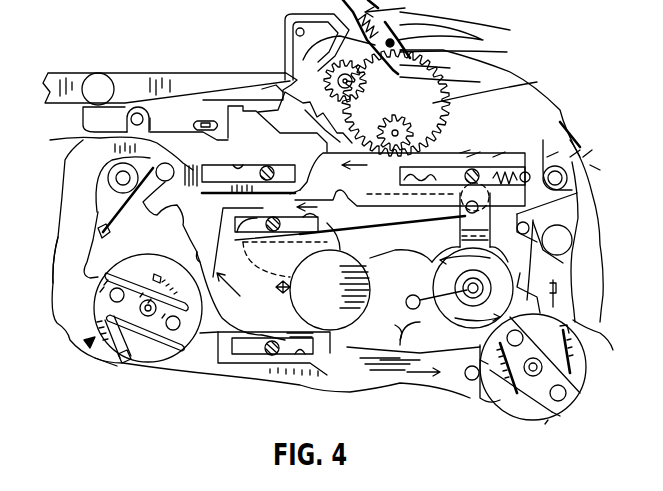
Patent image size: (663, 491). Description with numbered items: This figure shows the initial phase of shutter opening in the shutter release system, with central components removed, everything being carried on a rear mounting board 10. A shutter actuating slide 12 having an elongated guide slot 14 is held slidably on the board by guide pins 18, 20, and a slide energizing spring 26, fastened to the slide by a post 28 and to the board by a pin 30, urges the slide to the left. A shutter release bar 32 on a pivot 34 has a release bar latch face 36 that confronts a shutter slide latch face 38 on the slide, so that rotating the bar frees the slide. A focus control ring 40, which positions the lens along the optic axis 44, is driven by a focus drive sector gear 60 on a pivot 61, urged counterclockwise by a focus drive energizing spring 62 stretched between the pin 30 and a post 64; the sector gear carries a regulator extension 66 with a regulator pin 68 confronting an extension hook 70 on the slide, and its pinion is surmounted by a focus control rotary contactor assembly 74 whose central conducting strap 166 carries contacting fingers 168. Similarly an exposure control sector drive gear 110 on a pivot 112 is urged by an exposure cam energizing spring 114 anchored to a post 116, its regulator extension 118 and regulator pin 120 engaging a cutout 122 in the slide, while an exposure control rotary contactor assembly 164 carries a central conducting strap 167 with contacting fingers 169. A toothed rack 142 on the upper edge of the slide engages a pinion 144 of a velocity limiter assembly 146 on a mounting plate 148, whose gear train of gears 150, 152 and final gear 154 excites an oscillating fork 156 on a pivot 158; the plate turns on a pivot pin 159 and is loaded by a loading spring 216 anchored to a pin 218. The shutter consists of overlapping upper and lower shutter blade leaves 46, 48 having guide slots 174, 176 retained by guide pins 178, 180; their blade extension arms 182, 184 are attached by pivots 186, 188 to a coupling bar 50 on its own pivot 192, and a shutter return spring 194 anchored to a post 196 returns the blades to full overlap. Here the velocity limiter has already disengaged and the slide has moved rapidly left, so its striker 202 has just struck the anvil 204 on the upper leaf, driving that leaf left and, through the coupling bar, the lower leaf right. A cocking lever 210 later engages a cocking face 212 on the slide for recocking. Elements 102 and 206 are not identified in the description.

The rear mounting board 10 is at (510, 72).
The shutter actuating slide 12 is at (460, 153).
The elongated guide slot 14 is at (493, 157).
The guide pin 18 is at (467, 157).
The guide pin 20 is at (246, 163).
The slide energizing spring 26 is at (547, 157).
The post 28 is at (570, 157).
The pin 30 is at (70, 140).
The shutter release bar 32 is at (122, 73).
The pivot 34 is at (70, 73).
The release bar latch face 36 is at (228, 104).
The shutter slide latch face 38 is at (286, 96).
The focus control ring 40 is at (472, 176).
The optic axis 44 is at (292, 287).
The upper shutter blade leaf 46 is at (212, 318).
The lower shutter blade leaf 48 is at (380, 258).
The coupling bar 50 is at (447, 258).
The focus drive sector gear 60 is at (243, 291).
The pivot 61 is at (108, 170).
The focus drive energizing spring 62 is at (83, 205).
The post 64 is at (98, 230).
The regulator extension 66 is at (152, 116).
The regulator pin 68 is at (140, 108).
The extension hook 70 is at (83, 112).
The focus control rotary contactor assembly 74 is at (95, 337).
The housing 102 is at (571, 5).
The exposure control sector drive gear 110 is at (580, 295).
The pivot 112 is at (579, 212).
The exposure cam energizing spring 114 is at (603, 267).
The post 116 is at (577, 195).
The regulator extension 118 is at (583, 157).
The regulator pin 120 is at (580, 147).
The cutout 122 is at (590, 168).
The toothed rack 142 is at (350, 142).
The pinion 144 is at (398, 116).
The velocity limiter assembly 146 is at (472, 26).
The mounting plate 148 is at (283, 44).
The gear 150 is at (499, 88).
The gear 152 is at (451, 82).
The final gear 154 is at (435, 69).
The oscillating fork 156 is at (343, 3).
The pivot 158 is at (283, 37).
The pivot pin 159 is at (266, 82).
The exposure control rotary contactor assembly 164 is at (603, 388).
The central conducting strap 166 is at (163, 332).
The central conducting strap 167 is at (557, 412).
The contacting fingers 168 is at (110, 257).
The contacting fingers 169 is at (593, 325).
The guide slot 174 is at (266, 166).
The guide slot 176 is at (303, 357).
The guide pin 178 is at (223, 243).
The guide pin 180 is at (258, 348).
The blade extension arm 182 is at (403, 254).
The blade extension arm 184 is at (400, 331).
The pivot 186 is at (573, 184).
The pivot 188 is at (468, 381).
The pivot 192 is at (477, 283).
The shutter return spring 194 is at (424, 288).
The post 196 is at (400, 330).
The striker 202 is at (310, 190).
The anvil 204 is at (307, 182).
The hidden edge 206 is at (500, 387).
The cocking lever 210 is at (196, 124).
The cocking face 212 is at (198, 92).
The loading spring 216 is at (447, 37).
The pin 218 is at (466, 52).